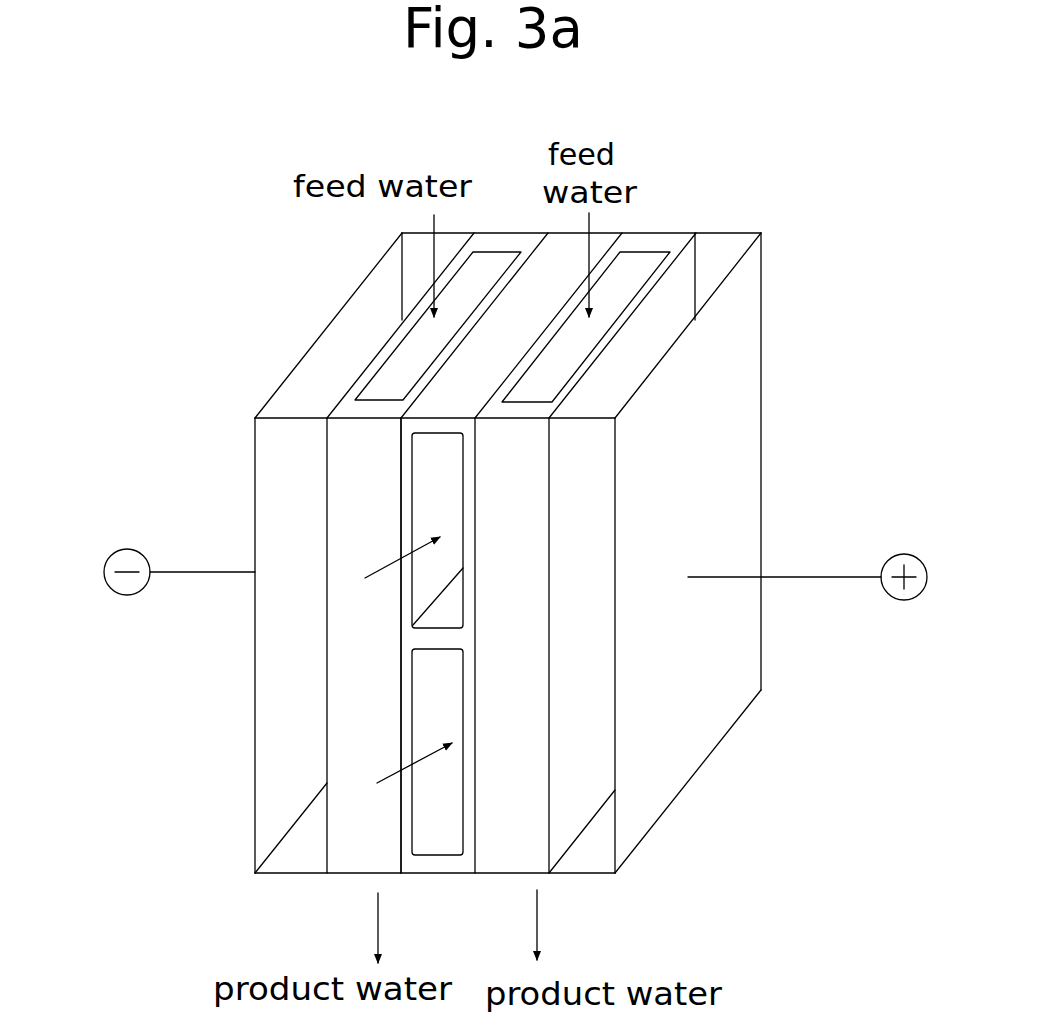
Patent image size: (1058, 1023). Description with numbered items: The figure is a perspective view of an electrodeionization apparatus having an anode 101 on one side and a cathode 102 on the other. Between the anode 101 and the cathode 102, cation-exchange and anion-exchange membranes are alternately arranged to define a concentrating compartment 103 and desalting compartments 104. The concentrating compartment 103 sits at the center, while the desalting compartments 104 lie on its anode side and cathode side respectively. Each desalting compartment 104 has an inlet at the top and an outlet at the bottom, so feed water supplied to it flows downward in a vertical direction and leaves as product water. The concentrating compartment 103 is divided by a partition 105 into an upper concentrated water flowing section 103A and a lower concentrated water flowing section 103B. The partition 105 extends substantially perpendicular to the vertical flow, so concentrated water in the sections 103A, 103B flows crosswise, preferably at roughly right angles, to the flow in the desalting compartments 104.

The anode 101 is at (733, 653).
The cathode 102 is at (255, 453).
The concentrating compartment 103 is at (447, 842).
The concentrated water flowing section 103A is at (445, 493).
The concentrated water flowing section 103B is at (430, 705).
The desalting compartment 104 is at (485, 263).
The partition 105 is at (450, 610).